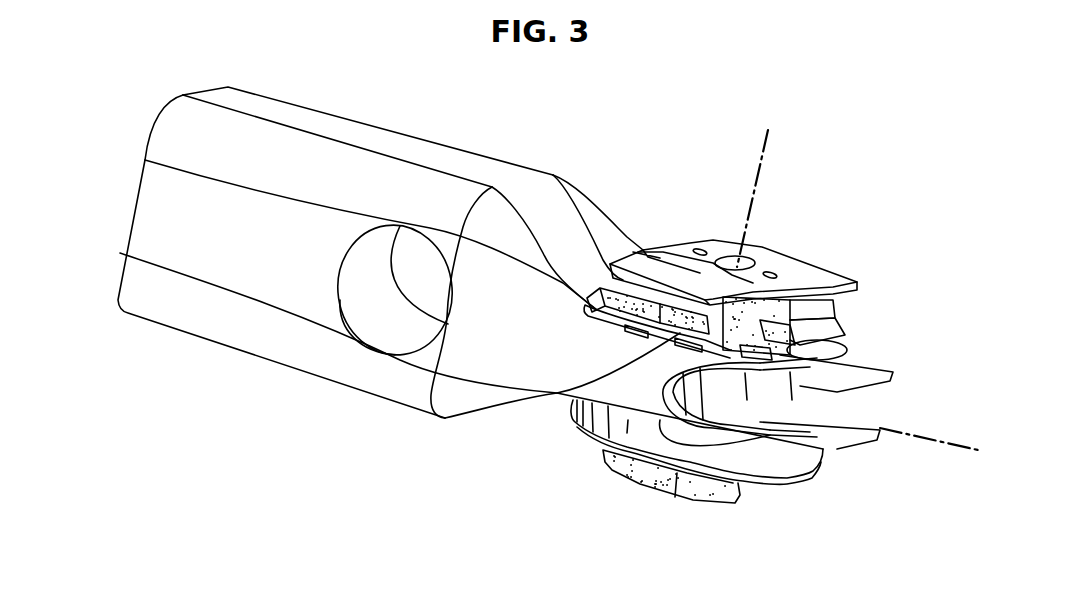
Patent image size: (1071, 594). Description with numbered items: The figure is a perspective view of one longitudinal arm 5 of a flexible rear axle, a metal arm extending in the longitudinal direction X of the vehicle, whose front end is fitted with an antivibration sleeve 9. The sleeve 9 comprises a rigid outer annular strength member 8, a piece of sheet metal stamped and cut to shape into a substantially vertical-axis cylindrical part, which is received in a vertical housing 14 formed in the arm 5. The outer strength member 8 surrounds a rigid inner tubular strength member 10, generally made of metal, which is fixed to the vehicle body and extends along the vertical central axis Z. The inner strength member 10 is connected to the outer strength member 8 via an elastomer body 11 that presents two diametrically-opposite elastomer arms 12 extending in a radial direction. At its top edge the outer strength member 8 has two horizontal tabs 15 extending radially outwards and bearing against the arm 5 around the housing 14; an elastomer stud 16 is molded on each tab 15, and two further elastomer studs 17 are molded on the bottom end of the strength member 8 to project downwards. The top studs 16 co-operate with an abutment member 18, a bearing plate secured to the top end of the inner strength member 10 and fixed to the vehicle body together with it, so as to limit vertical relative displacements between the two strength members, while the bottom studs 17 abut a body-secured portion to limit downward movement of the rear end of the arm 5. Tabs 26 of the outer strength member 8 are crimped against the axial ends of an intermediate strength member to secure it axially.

The longitudinal arm 5 is at (477, 156).
The abutment member 18 is at (800, 268).
The antivibration sleeve 9 is at (870, 267).
The elastomer arms 12 is at (790, 325).
The elastomer body 11 is at (753, 328).
The outer annular strength member 8 is at (846, 352).
The elastomer stud 16 is at (627, 303).
The horizontal tabs 15 is at (663, 330).
The elastomer studs 17 is at (627, 463).
The inner tubular strength member 10 is at (705, 493).
The tabs 26 is at (767, 357).
The vertical housing 14 is at (785, 345).
The vertical central axis Z is at (765, 152).
The longitudinal direction X is at (944, 445).